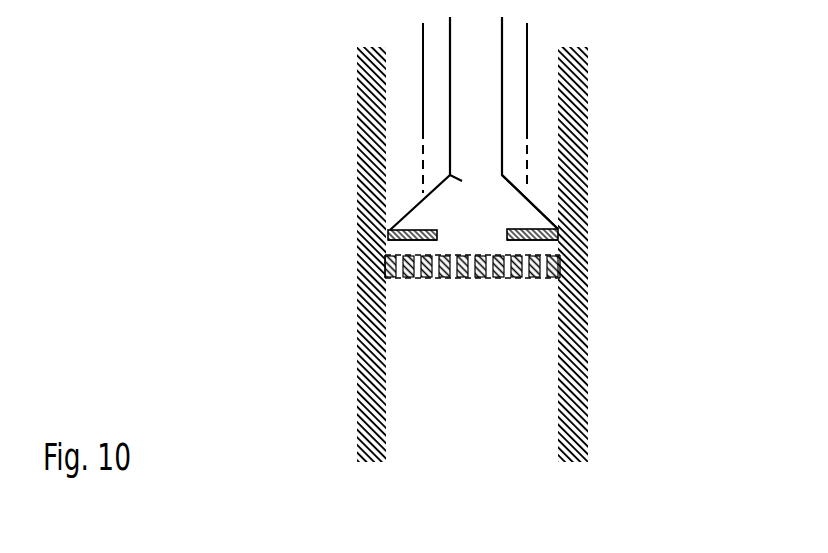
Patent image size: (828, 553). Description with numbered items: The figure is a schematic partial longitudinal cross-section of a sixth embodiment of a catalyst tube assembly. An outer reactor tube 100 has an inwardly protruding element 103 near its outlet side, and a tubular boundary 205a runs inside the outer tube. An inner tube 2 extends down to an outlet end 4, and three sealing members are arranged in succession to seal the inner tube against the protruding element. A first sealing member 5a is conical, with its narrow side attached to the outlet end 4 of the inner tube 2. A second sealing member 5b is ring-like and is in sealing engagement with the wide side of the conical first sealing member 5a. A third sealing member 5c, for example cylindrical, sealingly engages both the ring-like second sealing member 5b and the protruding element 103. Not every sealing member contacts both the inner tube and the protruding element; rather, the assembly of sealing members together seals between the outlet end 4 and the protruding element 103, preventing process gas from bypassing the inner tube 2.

The outer reactor tube 100 is at (357, 232).
The tubular boundary 205a is at (532, 60).
The inner tube 2 is at (503, 120).
The outlet end 4 is at (464, 186).
The first sealing member 5a is at (538, 220).
The second sealing member 5b is at (561, 226).
The third sealing member 5c is at (535, 247).
The protruding element 103 is at (562, 261).